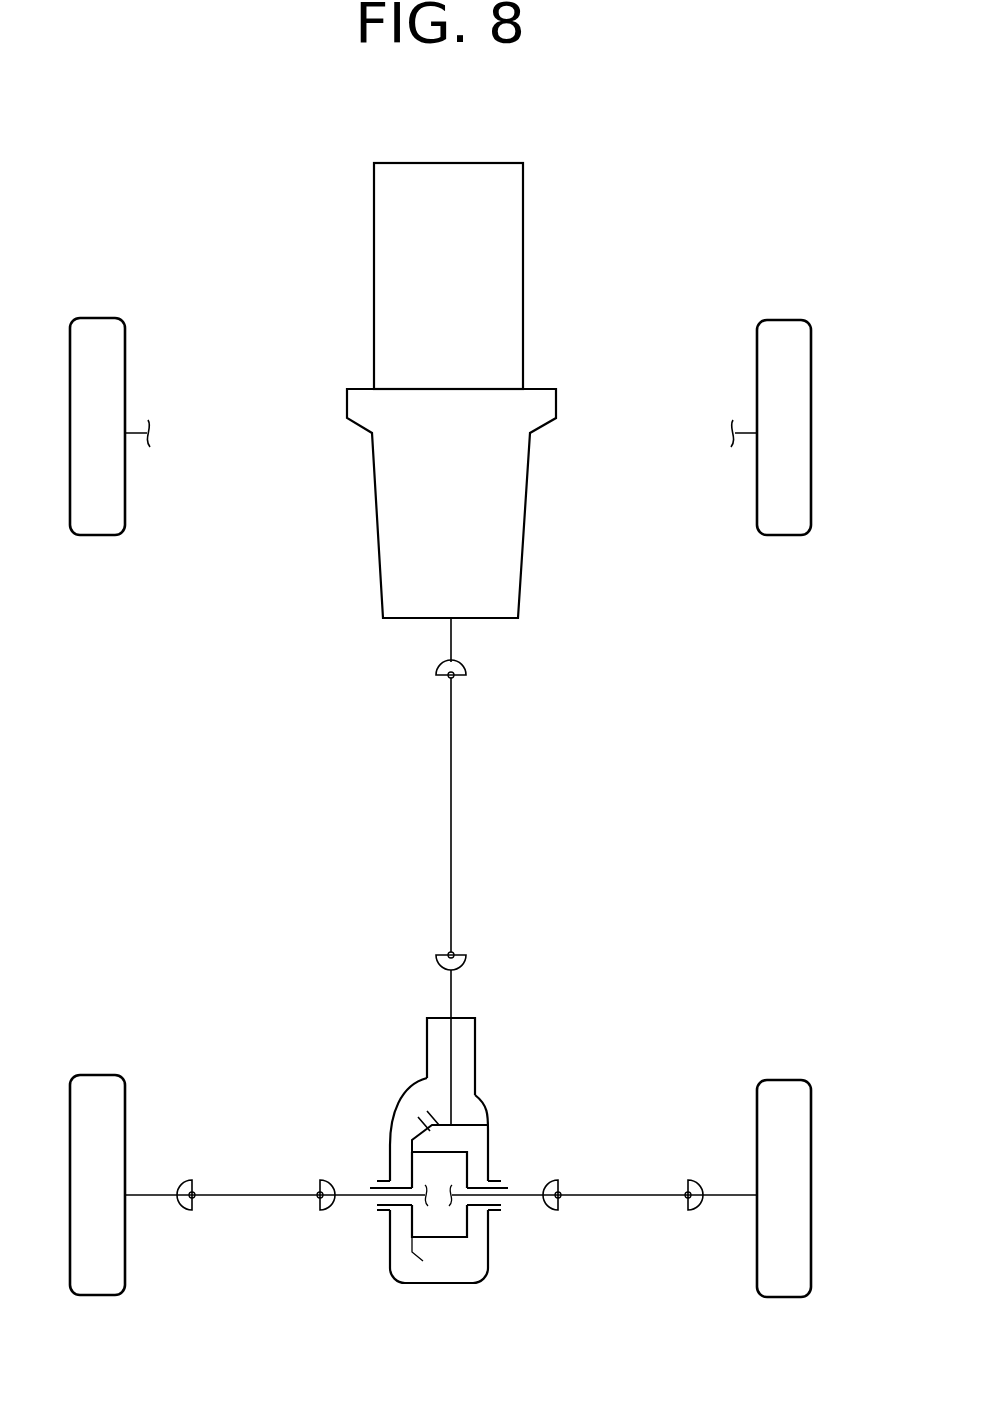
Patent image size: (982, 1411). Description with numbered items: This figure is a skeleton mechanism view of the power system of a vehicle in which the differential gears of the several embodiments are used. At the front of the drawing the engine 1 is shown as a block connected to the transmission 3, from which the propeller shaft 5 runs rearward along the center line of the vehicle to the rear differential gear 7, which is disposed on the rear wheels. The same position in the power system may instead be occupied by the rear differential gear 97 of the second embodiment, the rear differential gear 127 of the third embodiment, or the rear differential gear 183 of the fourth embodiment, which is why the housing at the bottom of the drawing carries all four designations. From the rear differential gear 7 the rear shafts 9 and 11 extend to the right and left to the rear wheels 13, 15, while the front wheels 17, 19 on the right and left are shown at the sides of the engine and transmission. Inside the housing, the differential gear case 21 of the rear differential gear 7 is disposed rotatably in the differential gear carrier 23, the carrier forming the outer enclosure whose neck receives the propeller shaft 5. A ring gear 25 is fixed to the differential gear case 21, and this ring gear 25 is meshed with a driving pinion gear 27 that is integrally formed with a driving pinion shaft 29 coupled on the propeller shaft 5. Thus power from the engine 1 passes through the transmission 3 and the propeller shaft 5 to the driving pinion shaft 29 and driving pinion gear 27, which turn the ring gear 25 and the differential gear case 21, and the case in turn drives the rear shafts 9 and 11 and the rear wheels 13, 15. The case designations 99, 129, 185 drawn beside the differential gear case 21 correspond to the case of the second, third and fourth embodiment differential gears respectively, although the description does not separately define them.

The engine 1 is at (458, 163).
The transmission 3 is at (528, 505).
The propeller shaft 5 is at (452, 800).
The rear differential gear 7 is at (355, 1153).
The rear differential gear 97 is at (355, 1153).
The rear differential gear 127 is at (355, 1153).
The rear differential gear 183 is at (356, 1106).
The rear shaft 9 is at (279, 1179).
The rear shaft 11 is at (598, 1182).
The rear wheel 13 is at (100, 1075).
The rear wheel 15 is at (787, 1080).
The front wheel 17 is at (100, 318).
The front wheel 19 is at (792, 320).
The differential gear case 21 is at (548, 1248).
The differential case 99 is at (548, 1248).
The differential case 129 is at (548, 1248).
The differential case 185 is at (458, 1238).
The differential gear carrier 23 is at (460, 1018).
The ring gear 25 is at (415, 1266).
The driving pinion gear 27 is at (484, 1133).
The driving pinion shaft 29 is at (452, 1056).